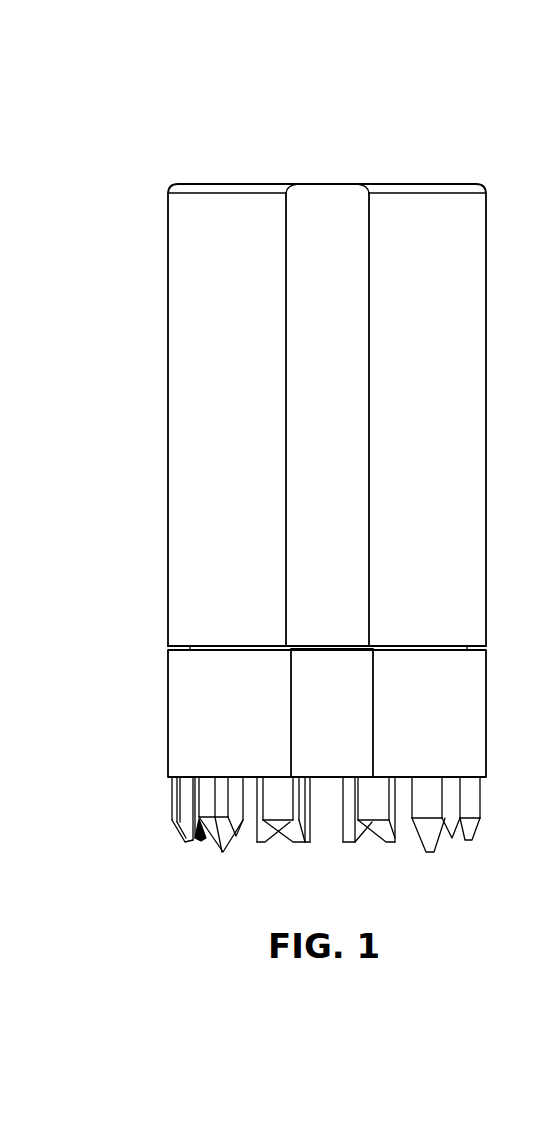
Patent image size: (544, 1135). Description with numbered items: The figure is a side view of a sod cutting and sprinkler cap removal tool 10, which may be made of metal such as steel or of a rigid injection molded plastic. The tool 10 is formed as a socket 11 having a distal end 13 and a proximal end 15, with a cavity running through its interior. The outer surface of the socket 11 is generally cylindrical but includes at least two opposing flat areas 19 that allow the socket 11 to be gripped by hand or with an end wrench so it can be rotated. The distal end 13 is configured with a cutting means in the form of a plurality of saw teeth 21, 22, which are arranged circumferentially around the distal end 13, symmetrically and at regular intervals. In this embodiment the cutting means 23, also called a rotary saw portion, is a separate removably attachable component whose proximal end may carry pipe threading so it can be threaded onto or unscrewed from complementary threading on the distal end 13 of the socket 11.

The sod cutting and sprinkler cap removal tool 10 is at (348, 80).
The socket 11 is at (168, 432).
The distal end 13 is at (124, 646).
The proximal end 15 is at (142, 244).
The flat areas 19 is at (340, 206).
The saw teeth 21 is at (225, 850).
The saw teeth 22 is at (266, 850).
The cutting means 23 is at (168, 712).